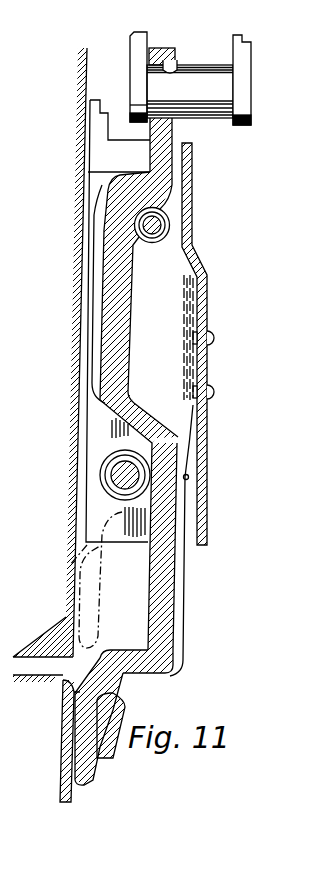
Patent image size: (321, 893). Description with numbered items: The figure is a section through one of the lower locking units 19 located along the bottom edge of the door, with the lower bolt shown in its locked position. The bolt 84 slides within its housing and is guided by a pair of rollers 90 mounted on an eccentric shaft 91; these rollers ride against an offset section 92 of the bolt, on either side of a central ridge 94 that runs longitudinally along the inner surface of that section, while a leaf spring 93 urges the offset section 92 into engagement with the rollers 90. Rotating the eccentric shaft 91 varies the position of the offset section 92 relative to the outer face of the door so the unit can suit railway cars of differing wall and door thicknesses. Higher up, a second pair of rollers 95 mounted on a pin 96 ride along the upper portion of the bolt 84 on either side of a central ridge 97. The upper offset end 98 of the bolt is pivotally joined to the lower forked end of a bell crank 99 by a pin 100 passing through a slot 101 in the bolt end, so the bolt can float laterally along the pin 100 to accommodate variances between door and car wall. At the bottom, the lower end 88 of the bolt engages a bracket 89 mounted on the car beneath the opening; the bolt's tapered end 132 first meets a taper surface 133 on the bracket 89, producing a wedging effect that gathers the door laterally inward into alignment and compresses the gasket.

The lower locking unit 19 is at (220, 337).
The bolt 84 is at (181, 523).
The lower end of bolt 88 is at (83, 735).
The bracket 89 is at (116, 744).
The rollers 90 is at (110, 448).
The eccentric shaft 91 is at (112, 478).
The offset section 92 is at (167, 587).
The leaf spring 93 is at (188, 420).
The central ridge 94 is at (147, 582).
The second pair of rollers 95 is at (171, 220).
The pin 96 is at (150, 243).
The central ridge 97 is at (132, 344).
The upper offset end of bolt 98 is at (160, 167).
The bell crank 99 is at (243, 55).
The pin 100 is at (218, 87).
The slot 101 is at (183, 72).
The tapered end 132 is at (88, 765).
The taper surface 133 is at (113, 685).